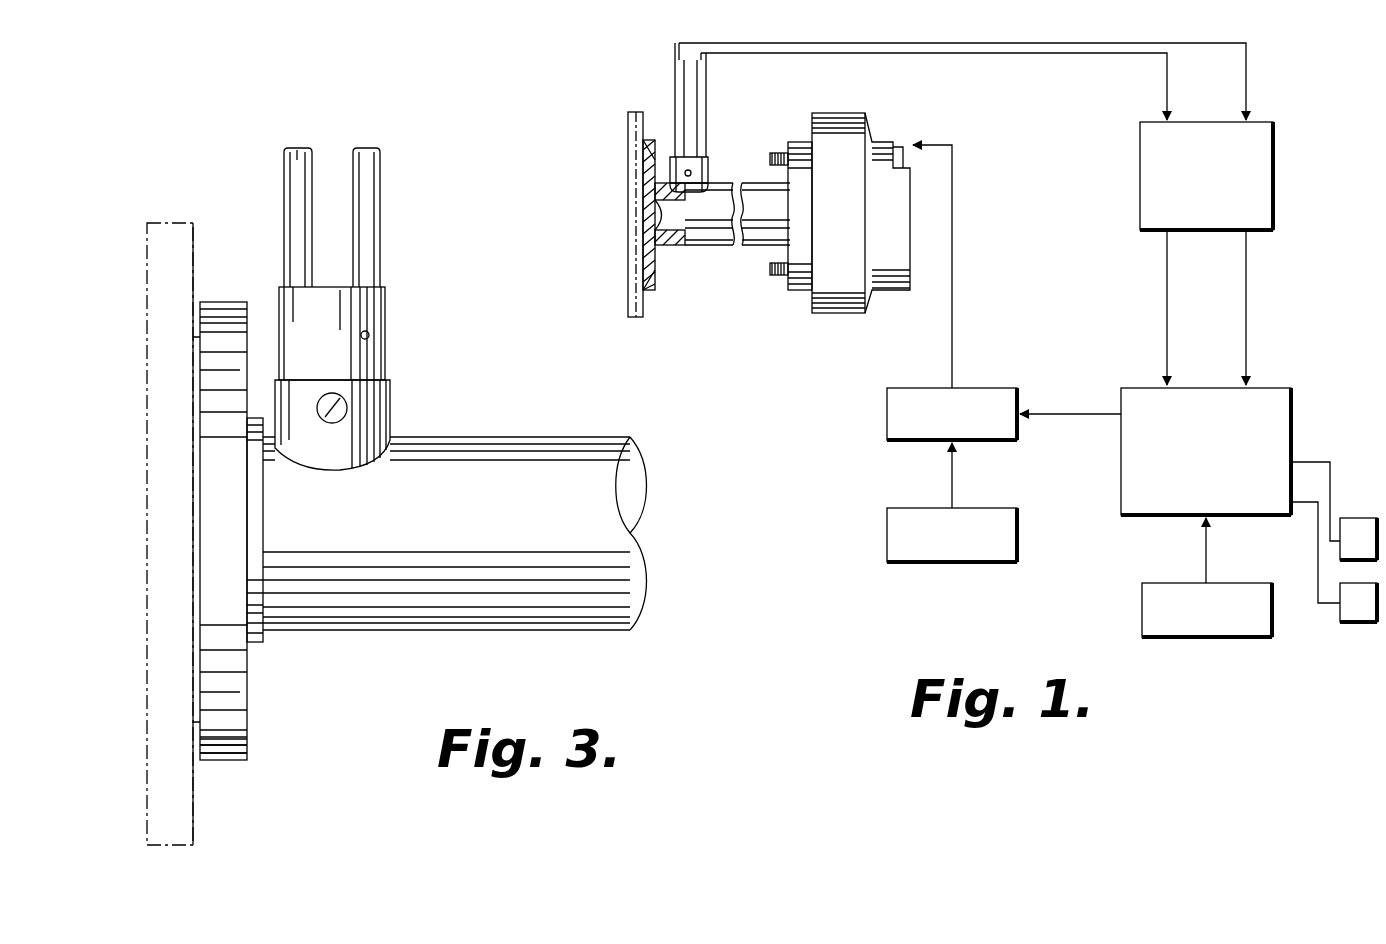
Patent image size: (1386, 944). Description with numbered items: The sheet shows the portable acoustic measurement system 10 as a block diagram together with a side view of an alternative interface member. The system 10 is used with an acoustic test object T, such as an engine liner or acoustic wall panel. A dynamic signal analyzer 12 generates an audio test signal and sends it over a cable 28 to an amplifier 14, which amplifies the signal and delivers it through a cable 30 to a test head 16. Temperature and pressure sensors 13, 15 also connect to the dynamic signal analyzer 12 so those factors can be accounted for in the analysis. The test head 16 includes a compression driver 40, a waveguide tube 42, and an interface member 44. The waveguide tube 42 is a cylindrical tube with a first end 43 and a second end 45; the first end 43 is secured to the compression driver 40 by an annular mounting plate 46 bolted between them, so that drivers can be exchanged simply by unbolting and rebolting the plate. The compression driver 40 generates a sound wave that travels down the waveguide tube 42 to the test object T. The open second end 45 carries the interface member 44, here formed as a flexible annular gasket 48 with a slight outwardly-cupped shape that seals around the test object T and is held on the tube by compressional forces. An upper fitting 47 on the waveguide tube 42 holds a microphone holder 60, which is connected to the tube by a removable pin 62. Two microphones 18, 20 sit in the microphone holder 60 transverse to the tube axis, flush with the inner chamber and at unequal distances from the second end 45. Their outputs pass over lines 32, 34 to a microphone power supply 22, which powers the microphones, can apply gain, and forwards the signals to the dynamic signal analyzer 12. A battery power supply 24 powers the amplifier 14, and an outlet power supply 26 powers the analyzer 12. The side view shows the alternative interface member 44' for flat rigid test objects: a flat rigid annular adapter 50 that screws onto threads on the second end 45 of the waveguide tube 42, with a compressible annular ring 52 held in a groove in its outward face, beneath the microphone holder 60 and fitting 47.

In FIG. 1, the portable acoustic measurement system 10 is at (1318, 106).
In FIG. 1, the dynamic signal analyzer 12 is at (1291, 390).
In FIG. 1, the temperature sensor 13 is at (1360, 518).
In FIG. 1, the amplifier 14 is at (887, 405).
In FIG. 1, the pressure sensor 15 is at (1358, 622).
In FIG. 1, the test head 16 is at (740, 338).
In FIG. 1, the microphone 18 is at (675, 68).
In FIG. 1, the microphone 20 is at (706, 66).
In FIG. 1, the microphone power supply 22 is at (1273, 172).
In FIG. 1, the battery power supply 24 is at (887, 532).
In FIG. 1, the outlet power supply 26 is at (1142, 606).
In FIG. 1, the cable 28 is at (1080, 414).
In FIG. 1, the cable 30 is at (952, 270).
In FIG. 1, the line 32 is at (925, 43).
In FIG. 1, the line 34 is at (925, 53).
In FIG. 1, the compression driver 40 is at (868, 133).
In FIG. 3, the waveguide tube 42 is at (490, 437).
In FIG. 1, the waveguide tube 42 is at (762, 247).
In FIG. 1, the first end 43 is at (772, 195).
In FIG. 1, the interface member 44 is at (669, 245).
In FIG. 3, the interface member 44' is at (297, 770).
In FIG. 3, the second end 45 is at (318, 630).
In FIG. 1, the second end 45 is at (675, 247).
In FIG. 1, the annular mounting plate 46 is at (800, 290).
In FIG. 3, the upper fitting 47 is at (383, 418).
In FIG. 1, the upper fitting 47 is at (708, 183).
In FIG. 1, the flexible annular gasket 48 is at (648, 140).
In FIG. 3, the annular adapter 50 is at (222, 302).
In FIG. 3, the compressible annular ring 52 is at (195, 505).
In FIG. 3, the microphone holder 60 is at (375, 316).
In FIG. 1, the microphone holder 60 is at (700, 170).
In FIG. 1, the removable pin 62 is at (690, 170).
In FIG. 3, the test object T is at (147, 270).
In FIG. 1, the test object T is at (628, 135).